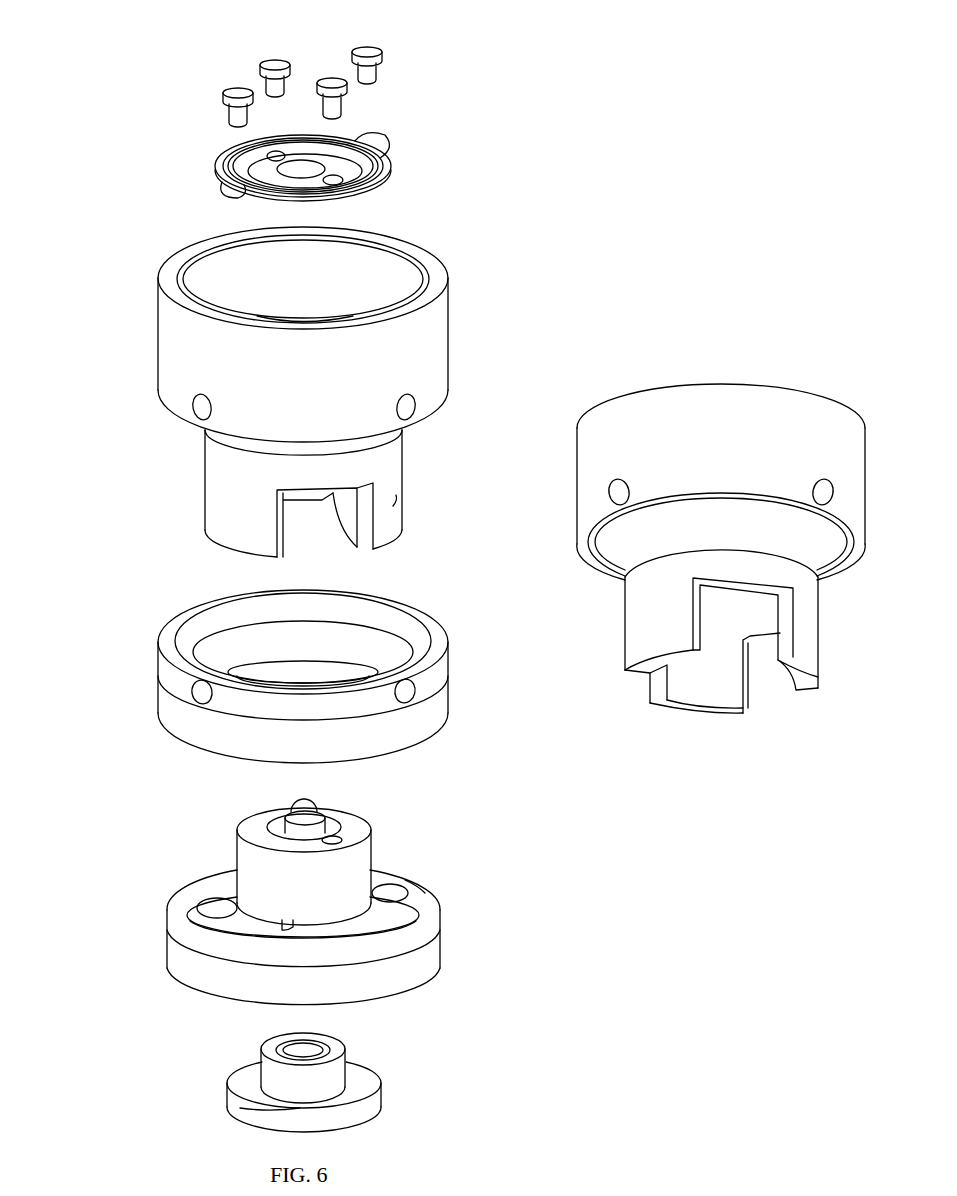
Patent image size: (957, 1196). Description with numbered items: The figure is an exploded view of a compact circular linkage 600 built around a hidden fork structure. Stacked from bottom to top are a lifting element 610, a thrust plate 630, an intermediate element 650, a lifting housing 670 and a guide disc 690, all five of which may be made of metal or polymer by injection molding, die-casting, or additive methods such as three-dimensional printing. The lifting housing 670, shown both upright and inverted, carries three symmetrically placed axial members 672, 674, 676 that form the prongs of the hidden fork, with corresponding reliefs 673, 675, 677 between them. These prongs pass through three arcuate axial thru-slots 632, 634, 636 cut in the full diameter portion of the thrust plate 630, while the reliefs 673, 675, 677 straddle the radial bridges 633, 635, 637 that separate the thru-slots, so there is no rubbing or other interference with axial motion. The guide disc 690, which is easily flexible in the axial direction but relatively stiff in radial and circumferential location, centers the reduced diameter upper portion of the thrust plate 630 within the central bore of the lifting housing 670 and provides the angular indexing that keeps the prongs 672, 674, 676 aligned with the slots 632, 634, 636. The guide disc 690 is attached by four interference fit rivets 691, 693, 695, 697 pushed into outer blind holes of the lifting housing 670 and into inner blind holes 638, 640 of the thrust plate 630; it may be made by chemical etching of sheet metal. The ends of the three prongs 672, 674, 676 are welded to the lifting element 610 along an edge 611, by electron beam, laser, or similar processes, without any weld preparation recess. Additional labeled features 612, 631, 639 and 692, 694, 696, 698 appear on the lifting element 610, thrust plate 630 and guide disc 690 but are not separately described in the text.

The compact circular linkage 600 is at (134, 74).
The lifting element 610 is at (351, 1093).
The edge 611 is at (240, 1108).
The boss 612 is at (328, 1037).
The thrust plate 630 is at (207, 973).
The top surface 631 is at (197, 933).
The axial thru-slot 632 is at (237, 865).
The radial bridge 633 is at (360, 924).
The axial thru-slot 634 is at (424, 887).
The radial bridge 635 is at (378, 877).
The axial thru-slot 636 is at (237, 866).
The radial bridge 637 is at (222, 885).
The inner blind hole 638 is at (337, 834).
The ball 639 is at (312, 795).
The inner blind hole 640 is at (275, 822).
The element 650 is at (190, 722).
The lifting housing 670 is at (171, 373).
The axial member 672 is at (223, 511).
The relief 673 is at (625, 620).
The axial member 674 is at (393, 506).
The relief 675 is at (354, 544).
The axial member 676 is at (693, 673).
The relief 677 is at (760, 620).
The guide disc 690 is at (288, 159).
The interference fit rivet 691 is at (368, 47).
The tab 692 is at (380, 140).
The interference fit rivet 693 is at (330, 79).
The tab 694 is at (383, 185).
The interference fit rivet 695 is at (237, 89).
The tab 696 is at (220, 184).
The interference fit rivet 697 is at (273, 60).
The central hole 698 is at (284, 152).